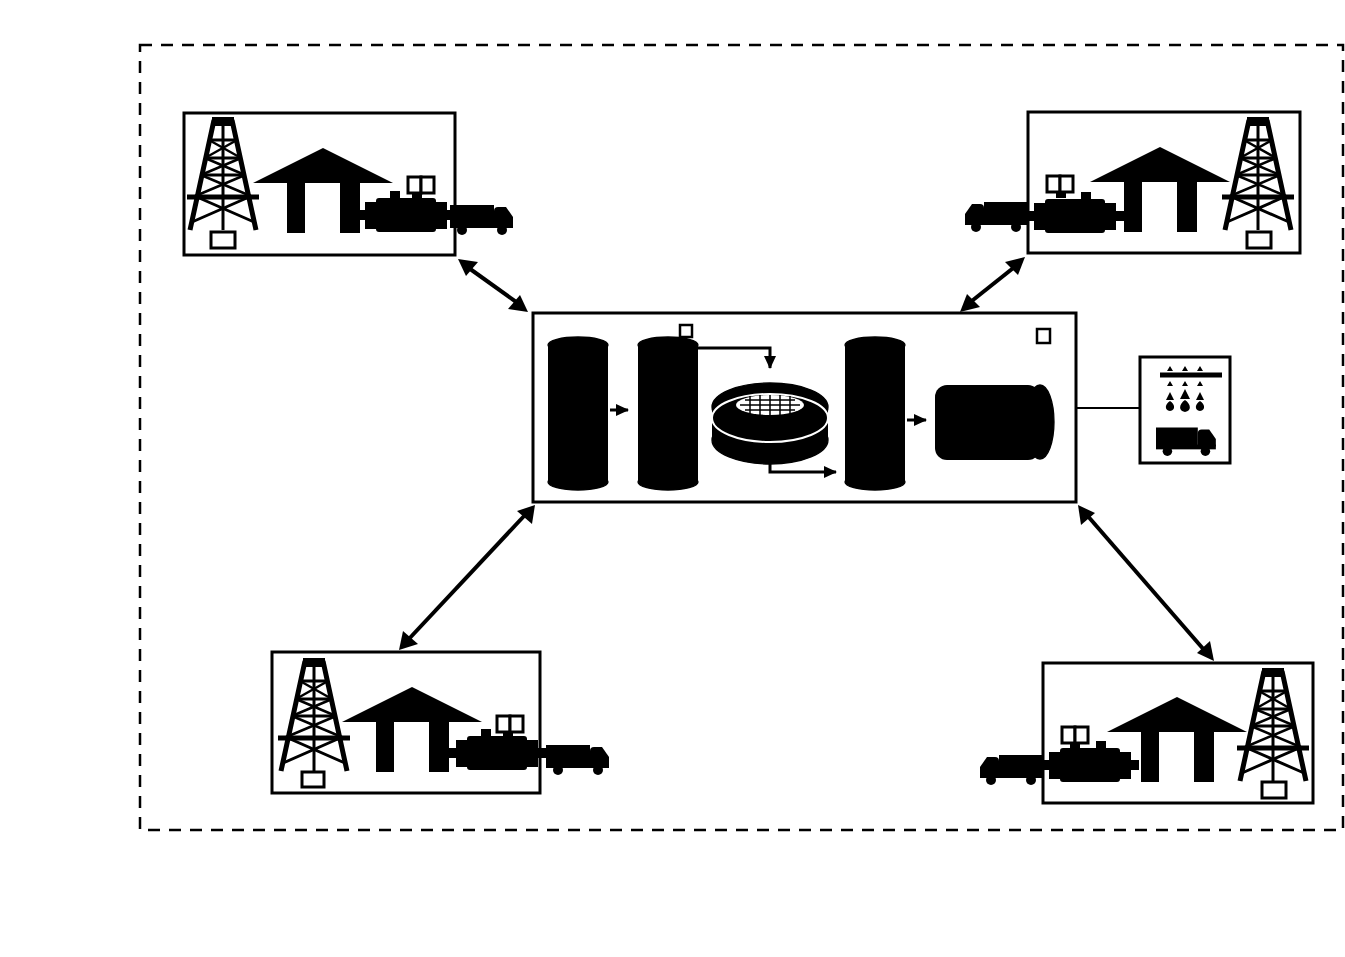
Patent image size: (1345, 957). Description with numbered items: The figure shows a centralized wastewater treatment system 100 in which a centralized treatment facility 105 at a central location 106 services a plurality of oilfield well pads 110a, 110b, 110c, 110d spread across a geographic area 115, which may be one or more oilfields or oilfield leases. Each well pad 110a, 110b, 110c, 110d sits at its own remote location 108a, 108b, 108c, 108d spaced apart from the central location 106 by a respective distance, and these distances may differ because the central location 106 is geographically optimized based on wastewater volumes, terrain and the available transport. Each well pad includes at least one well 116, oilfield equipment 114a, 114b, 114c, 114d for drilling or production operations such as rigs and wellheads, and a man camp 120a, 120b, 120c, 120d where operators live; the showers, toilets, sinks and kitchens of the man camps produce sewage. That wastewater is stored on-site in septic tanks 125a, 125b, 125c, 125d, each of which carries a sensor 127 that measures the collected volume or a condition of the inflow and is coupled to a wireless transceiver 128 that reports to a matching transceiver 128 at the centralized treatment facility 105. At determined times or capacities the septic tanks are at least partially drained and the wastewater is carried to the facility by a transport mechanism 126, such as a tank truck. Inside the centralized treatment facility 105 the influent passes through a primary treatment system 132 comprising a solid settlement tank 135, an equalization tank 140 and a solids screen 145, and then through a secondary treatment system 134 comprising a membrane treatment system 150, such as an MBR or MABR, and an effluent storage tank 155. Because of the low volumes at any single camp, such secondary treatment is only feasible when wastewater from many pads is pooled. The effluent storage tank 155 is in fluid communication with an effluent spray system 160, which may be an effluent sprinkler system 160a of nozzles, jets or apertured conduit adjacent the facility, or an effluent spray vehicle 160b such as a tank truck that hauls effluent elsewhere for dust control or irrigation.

The centralized wastewater treatment system 100 is at (114, 124).
The geographic area 115 is at (139, 342).
The centralized treatment facility 105 is at (742, 412).
The central location 106 is at (533, 450).
The remote location 108a is at (458, 172).
The remote location 108b is at (1027, 170).
The remote location 108c is at (272, 713).
The remote location 108d is at (1042, 710).
The well pad 110a is at (383, 185).
The well pad 110b is at (1101, 188).
The well pad 110c is at (348, 729).
The well pad 110d is at (1112, 740).
The oilfield equipment 114a is at (232, 122).
The oilfield equipment 114b is at (1268, 124).
The oilfield equipment 114c is at (312, 658).
The oilfield equipment 114d is at (1278, 668).
The well 116 is at (222, 250).
The man camp 120a is at (296, 236).
The man camp 120b is at (1140, 235).
The man camp 120c is at (380, 775).
The man camp 120d is at (1145, 783).
The septic tank 125a is at (410, 234).
The septic tank 125b is at (1070, 235).
The septic tank 125c is at (498, 772).
The septic tank 125d is at (1095, 783).
The transport mechanism 126 is at (516, 220).
The sensor 127 is at (413, 177).
The wireless transceiver 128 is at (428, 177).
The primary treatment system 132 is at (688, 412).
The secondary treatment system 134 is at (948, 412).
The solid settlement tank 135 is at (580, 338).
The equalization tank 140 is at (665, 338).
The solids screen 145 is at (790, 385).
The membrane treatment system 150 is at (875, 338).
The effluent storage tank 155 is at (992, 385).
The effluent spray system 160 is at (1242, 406).
The effluent sprinkler system 160a is at (1232, 375).
The effluent spray vehicle 160b is at (1218, 440).